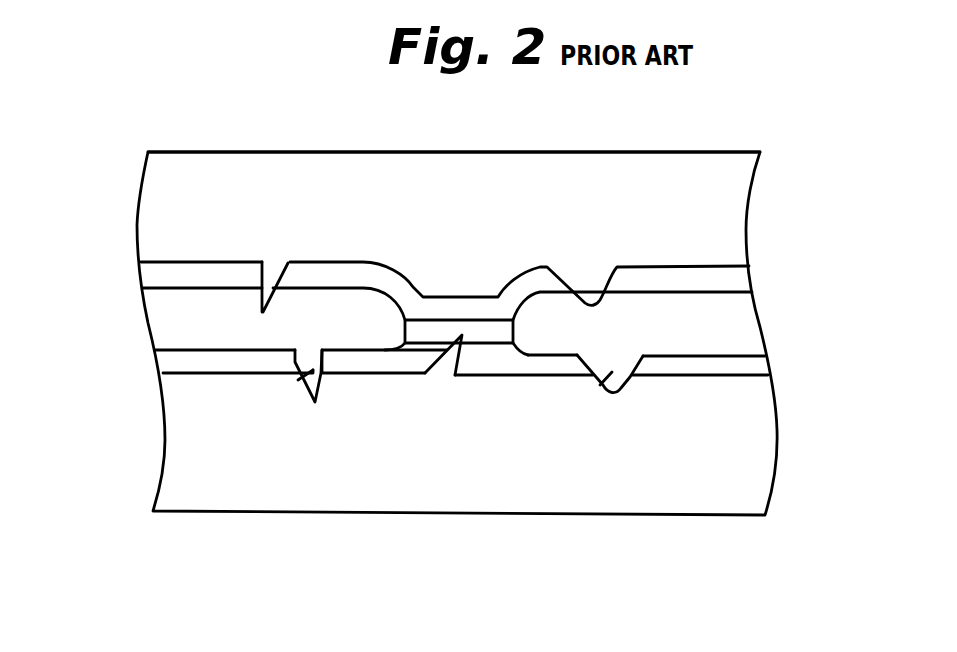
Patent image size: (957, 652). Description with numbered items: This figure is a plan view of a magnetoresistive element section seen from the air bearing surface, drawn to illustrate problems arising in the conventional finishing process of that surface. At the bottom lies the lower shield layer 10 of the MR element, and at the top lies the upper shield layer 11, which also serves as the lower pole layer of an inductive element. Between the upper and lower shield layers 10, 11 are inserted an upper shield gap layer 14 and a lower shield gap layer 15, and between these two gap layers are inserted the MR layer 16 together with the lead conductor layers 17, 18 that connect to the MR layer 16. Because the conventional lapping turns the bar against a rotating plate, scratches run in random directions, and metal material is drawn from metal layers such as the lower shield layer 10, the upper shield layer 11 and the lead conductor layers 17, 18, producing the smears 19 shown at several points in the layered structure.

The lower shield layer 10 is at (755, 450).
The upper shield layer 11 is at (728, 218).
The upper shield gap layer 14 is at (752, 365).
The lower shield gap layer 15 is at (738, 283).
The MR layer 16 is at (487, 333).
The lead conductor layer 17 is at (740, 328).
The lead conductor layer 18 is at (168, 327).
The smear 19 is at (588, 292).